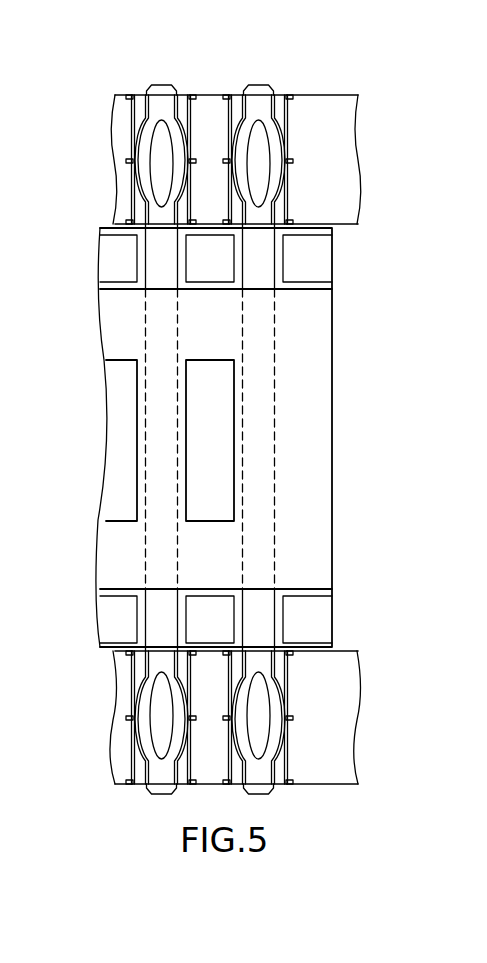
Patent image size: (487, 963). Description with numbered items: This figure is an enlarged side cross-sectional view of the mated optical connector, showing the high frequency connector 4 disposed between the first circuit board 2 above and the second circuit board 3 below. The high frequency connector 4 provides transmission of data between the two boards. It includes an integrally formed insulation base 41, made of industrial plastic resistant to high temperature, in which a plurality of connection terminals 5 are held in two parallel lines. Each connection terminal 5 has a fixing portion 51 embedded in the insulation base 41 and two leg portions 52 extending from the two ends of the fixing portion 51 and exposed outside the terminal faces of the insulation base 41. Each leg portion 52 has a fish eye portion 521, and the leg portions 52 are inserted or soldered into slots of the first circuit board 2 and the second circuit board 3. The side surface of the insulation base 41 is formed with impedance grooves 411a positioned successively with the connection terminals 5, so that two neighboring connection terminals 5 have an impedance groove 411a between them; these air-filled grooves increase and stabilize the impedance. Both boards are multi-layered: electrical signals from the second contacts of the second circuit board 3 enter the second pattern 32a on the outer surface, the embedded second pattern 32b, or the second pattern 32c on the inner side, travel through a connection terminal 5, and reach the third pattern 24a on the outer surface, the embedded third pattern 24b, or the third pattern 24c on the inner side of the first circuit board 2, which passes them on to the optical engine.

The first circuit board 2 is at (343, 113).
The third pattern on the outer surface 24a is at (129, 96).
The third pattern embedded 24b is at (128, 160).
The third pattern on the inner side 24c is at (128, 221).
The second circuit board 3 is at (345, 667).
The second pattern on the outer surface 32a is at (293, 781).
The second pattern embedded 32b is at (128, 720).
The second pattern on the inner side 32c is at (129, 656).
The high frequency connector 4 is at (267, 437).
The insulation base 41 is at (332, 448).
The impedance groove 411a is at (222, 477).
The connection terminal 5 is at (298, 418).
The fixing portion 51 is at (288, 439).
The leg portion 52 is at (272, 176).
The fish eye portion 521 is at (257, 148).